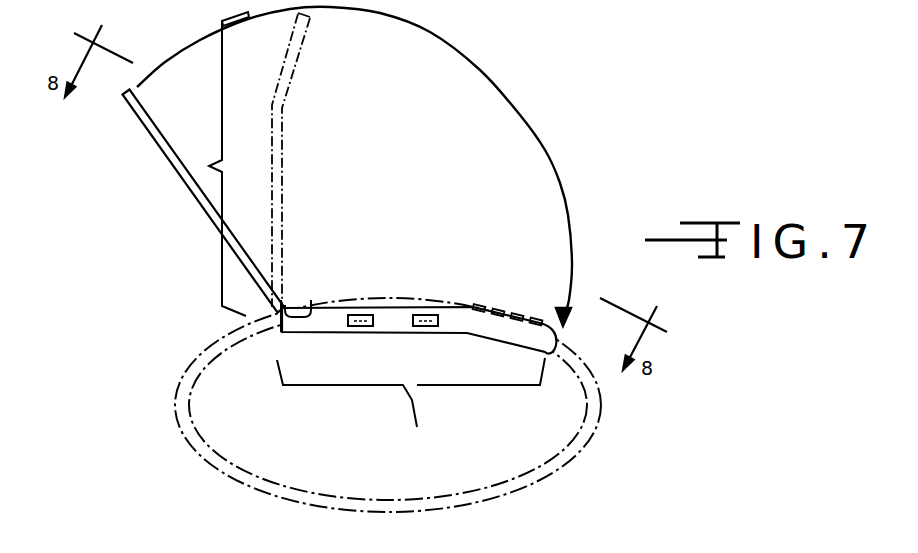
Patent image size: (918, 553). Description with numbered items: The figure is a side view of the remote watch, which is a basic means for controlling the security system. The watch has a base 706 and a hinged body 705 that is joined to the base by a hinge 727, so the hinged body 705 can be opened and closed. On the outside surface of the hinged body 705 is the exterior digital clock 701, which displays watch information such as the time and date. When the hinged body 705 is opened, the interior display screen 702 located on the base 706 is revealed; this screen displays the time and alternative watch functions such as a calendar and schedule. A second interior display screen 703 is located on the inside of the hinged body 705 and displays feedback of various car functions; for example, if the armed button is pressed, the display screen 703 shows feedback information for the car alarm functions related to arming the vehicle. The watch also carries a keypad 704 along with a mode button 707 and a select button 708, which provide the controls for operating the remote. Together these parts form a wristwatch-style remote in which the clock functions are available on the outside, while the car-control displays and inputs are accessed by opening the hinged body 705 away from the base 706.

The exterior digital clock 701 is at (150, 170).
The interior display screen 702 is at (163, 195).
The interior display screen 703 is at (337, 307).
The keypad 704 is at (518, 313).
The hinged body 705 is at (220, 166).
The base 706 is at (417, 427).
The mode button 707 is at (362, 327).
The select button 708 is at (430, 327).
The hinge 727 is at (308, 300).